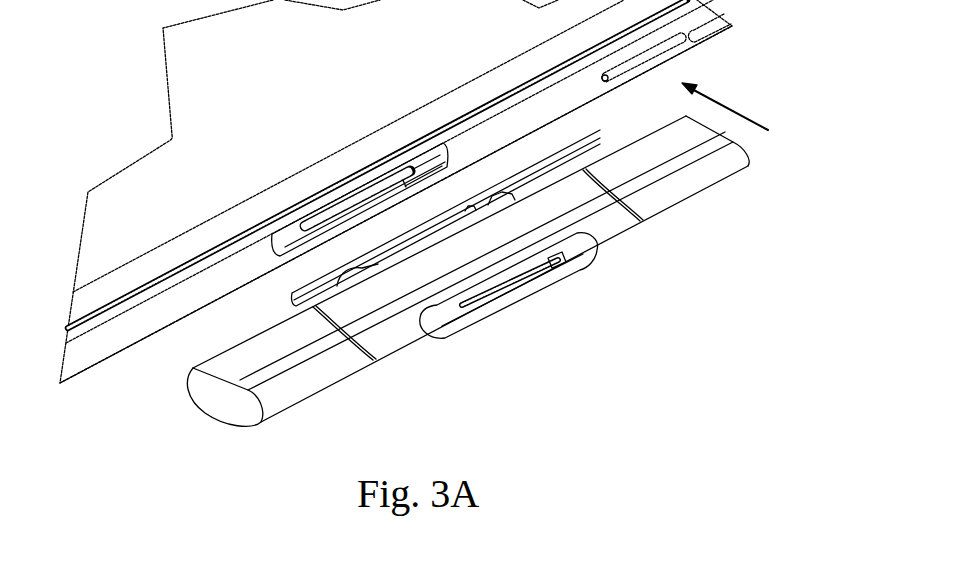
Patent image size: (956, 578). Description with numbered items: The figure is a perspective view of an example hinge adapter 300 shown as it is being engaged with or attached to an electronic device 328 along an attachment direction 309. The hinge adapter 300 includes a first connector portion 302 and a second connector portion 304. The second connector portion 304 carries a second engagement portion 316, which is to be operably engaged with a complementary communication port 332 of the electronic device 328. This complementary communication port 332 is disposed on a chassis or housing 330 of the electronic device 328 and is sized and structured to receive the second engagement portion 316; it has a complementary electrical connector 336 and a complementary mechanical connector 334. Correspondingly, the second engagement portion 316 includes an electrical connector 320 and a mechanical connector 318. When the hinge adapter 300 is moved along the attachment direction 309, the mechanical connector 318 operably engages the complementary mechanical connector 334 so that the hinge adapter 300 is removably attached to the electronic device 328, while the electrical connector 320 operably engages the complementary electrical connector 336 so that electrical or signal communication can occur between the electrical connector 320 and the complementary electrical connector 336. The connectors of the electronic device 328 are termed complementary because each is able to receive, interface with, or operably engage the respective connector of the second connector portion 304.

The hinge adapter 300 is at (751, 247).
The first connector portion 302 is at (611, 261).
The second connector portion 304 is at (576, 191).
The attachment direction 309 is at (722, 103).
The second engagement portion 316 is at (509, 192).
The mechanical connector 318 is at (487, 202).
The electrical connector 320 is at (399, 245).
The electronic device 328 is at (135, 137).
The chassis or housing 330 is at (530, 108).
The complementary communication port 332 is at (265, 253).
The complementary mechanical connector 334 is at (422, 165).
The complementary electrical connector 336 is at (338, 208).